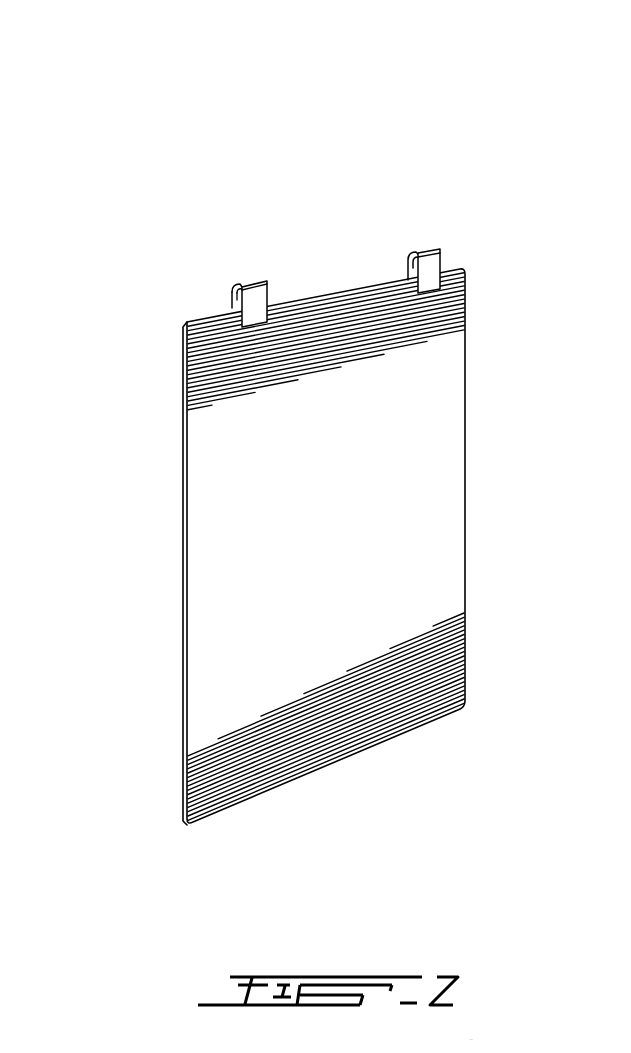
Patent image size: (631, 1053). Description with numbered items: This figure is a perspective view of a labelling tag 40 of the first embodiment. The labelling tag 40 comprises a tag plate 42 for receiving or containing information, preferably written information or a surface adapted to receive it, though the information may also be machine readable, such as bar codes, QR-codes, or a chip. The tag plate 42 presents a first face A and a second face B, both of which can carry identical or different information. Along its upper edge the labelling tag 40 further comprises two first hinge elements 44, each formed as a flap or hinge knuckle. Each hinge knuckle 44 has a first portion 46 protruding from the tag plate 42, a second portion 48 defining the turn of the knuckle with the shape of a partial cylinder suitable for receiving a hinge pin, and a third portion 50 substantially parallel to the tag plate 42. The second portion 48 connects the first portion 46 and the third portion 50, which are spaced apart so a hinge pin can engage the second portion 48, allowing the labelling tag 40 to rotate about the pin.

The labelling tag 40 is at (304, 418).
The tag plate 42 is at (304, 547).
The first hinge element 44 is at (339, 310).
The first portion 46 is at (234, 305).
The second portion 48 is at (247, 284).
The third portion 50 is at (253, 316).
The first face A is at (404, 534).
The second face B is at (226, 523).